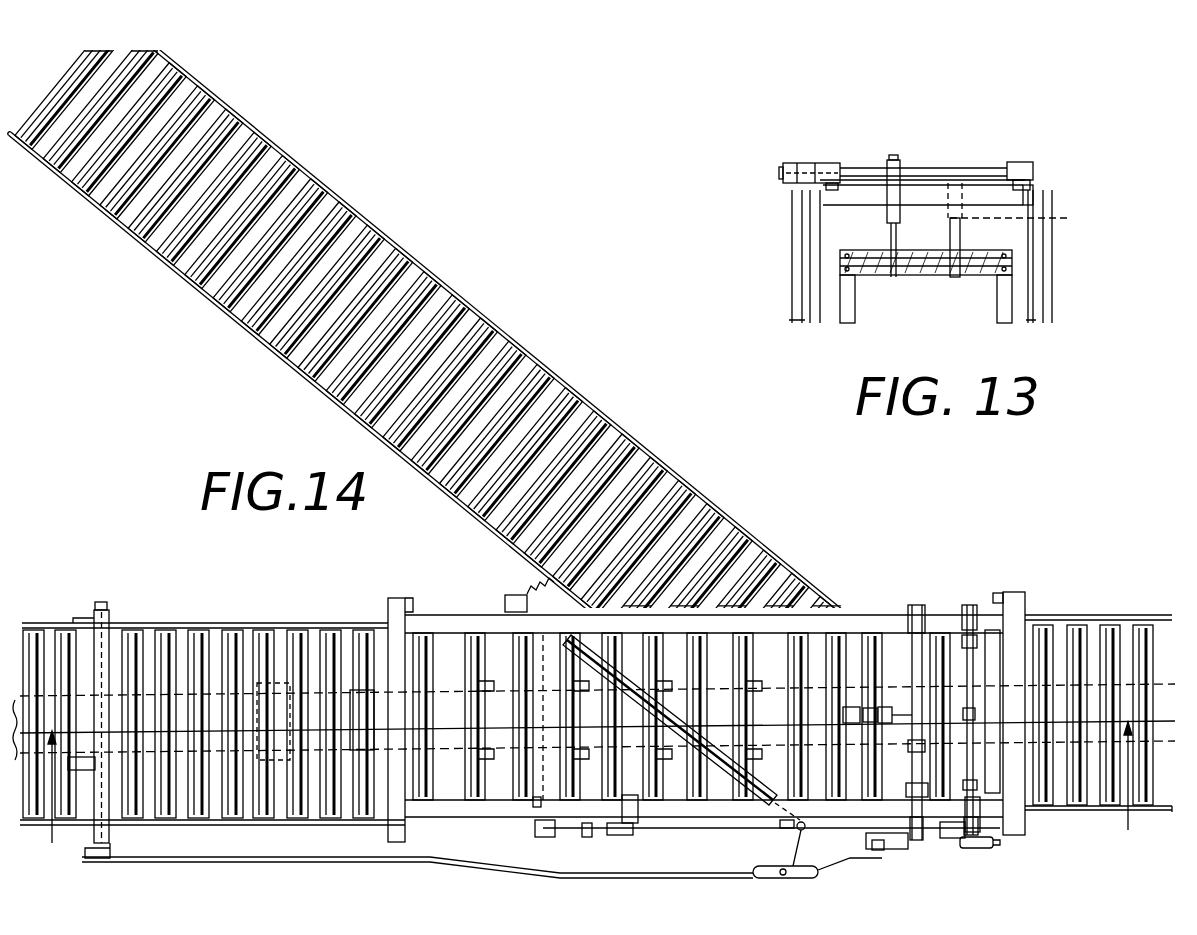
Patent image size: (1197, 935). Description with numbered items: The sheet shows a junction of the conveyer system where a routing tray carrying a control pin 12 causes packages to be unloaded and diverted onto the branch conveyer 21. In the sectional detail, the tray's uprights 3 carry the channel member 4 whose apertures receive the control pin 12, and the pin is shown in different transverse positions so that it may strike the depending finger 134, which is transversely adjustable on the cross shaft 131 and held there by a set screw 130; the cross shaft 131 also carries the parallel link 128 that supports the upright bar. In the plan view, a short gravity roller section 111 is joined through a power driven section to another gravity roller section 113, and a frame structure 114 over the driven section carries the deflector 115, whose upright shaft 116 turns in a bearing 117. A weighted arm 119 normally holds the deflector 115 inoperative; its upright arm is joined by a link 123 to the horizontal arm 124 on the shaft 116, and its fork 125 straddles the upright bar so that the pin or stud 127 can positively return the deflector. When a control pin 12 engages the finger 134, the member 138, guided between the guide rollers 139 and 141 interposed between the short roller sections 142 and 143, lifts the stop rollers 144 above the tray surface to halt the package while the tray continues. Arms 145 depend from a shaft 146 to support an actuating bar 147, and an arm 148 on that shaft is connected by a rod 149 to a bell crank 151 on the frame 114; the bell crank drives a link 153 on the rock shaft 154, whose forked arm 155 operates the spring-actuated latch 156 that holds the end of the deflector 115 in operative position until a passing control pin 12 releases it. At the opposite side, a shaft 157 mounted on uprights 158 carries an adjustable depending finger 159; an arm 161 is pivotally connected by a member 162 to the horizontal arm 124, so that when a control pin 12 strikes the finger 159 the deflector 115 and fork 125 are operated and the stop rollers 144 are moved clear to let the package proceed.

In FIG. 13, the uprights 3 is at (1000, 305).
In FIG. 13, the member 4 is at (1000, 262).
In FIG. 14, the control pin 12 is at (595, 800).
In FIG. 13, the control pin 12 is at (888, 236).
In FIG. 14, the branch conveyer 21 is at (568, 397).
In FIG. 14, the gravity roller section 111 is at (1143, 617).
In FIG. 14, the gravity roller section 113 is at (241, 625).
In FIG. 14, the frame structure 114 is at (432, 624).
In FIG. 13, the frame structure 114 is at (1028, 190).
In FIG. 14, the deflector 115 is at (723, 777).
In FIG. 14, the upright shaft 116 is at (790, 824).
In FIG. 14, the bearing 117 is at (808, 834).
In FIG. 14, the weighted arm 119 is at (942, 840).
In FIG. 14, the link 123 is at (883, 853).
In FIG. 14, the horizontal arm 124 is at (748, 874).
In FIG. 14, the fork 125 is at (858, 858).
In FIG. 14, the pin or stud 127 is at (878, 850).
In FIG. 14, the parallel link 128 is at (910, 840).
In FIG. 13, the parallel link 128 is at (810, 165).
In FIG. 13, the set screw 130 is at (890, 158).
In FIG. 14, the cross shaft 131 is at (903, 715).
In FIG. 13, the cross shaft 131 is at (948, 170).
In FIG. 13, the depending finger 134 is at (887, 210).
In FIG. 14, the member 138 is at (973, 677).
In FIG. 14, the guide roller 139 is at (899, 705).
In FIG. 14, the guide roller 141 is at (858, 637).
In FIG. 14, the short roller section 142 is at (880, 640).
In FIG. 14, the short roller section 143 is at (862, 798).
In FIG. 14, the stop rollers 144 is at (895, 707).
In FIG. 14, the arms 145 is at (990, 660).
In FIG. 14, the shaft 146 is at (980, 680).
In FIG. 14, the actuating bar 147 is at (988, 672).
In FIG. 14, the arm 148 is at (993, 845).
In FIG. 14, the rod 149 is at (690, 830).
In FIG. 14, the bell crank 151 is at (600, 836).
In FIG. 14, the link 153 is at (567, 835).
In FIG. 14, the rock shaft 154 is at (538, 780).
In FIG. 14, the forked arm 155 is at (510, 603).
In FIG. 14, the spring-actuated latch 156 is at (535, 594).
In FIG. 14, the shaft 157 is at (107, 603).
In FIG. 14, the uprights 158 is at (87, 618).
In FIG. 14, the depending finger 159 is at (88, 755).
In FIG. 14, the arm 161 is at (113, 850).
In FIG. 14, the member 162 is at (257, 862).